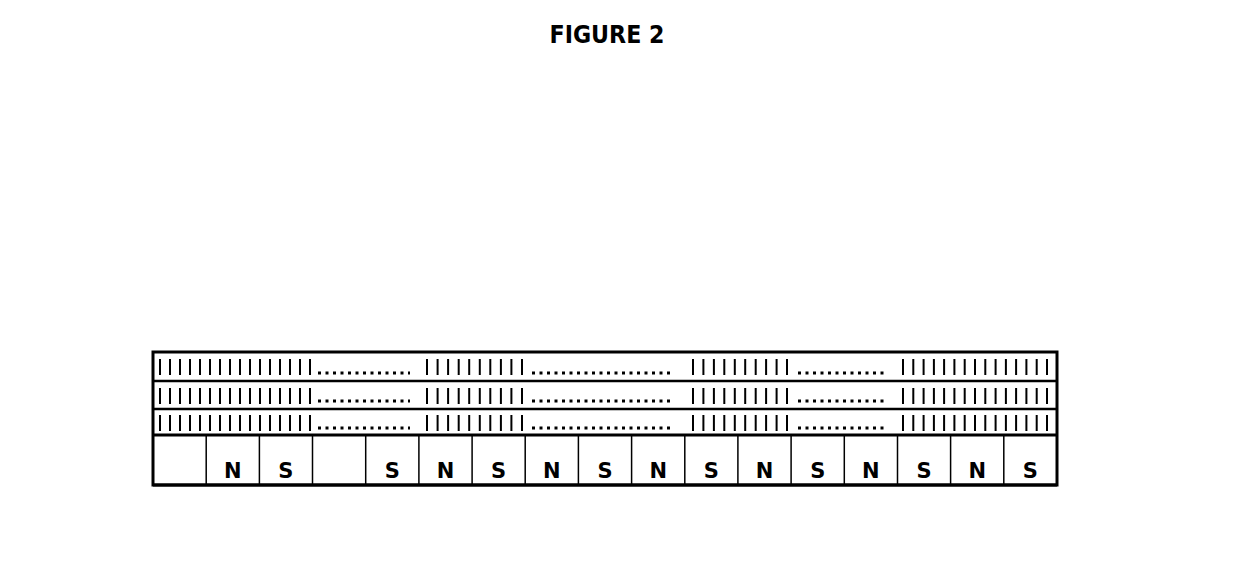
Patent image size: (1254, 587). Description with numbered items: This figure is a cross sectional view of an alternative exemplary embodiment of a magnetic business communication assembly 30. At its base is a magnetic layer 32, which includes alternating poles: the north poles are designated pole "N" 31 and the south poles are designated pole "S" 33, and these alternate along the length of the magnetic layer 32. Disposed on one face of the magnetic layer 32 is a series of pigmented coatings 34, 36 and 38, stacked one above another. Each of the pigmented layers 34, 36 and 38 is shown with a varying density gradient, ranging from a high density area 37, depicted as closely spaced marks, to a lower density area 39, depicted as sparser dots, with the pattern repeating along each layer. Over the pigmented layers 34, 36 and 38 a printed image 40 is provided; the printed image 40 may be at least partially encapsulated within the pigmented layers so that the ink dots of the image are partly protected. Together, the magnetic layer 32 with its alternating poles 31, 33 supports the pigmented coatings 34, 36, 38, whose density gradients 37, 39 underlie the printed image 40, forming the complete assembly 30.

The magnetic business communication assembly 30 is at (112, 395).
The pole "N" 31 is at (352, 470).
The magnetic layer 32 is at (150, 474).
The pole "S" 33 is at (190, 473).
The pigmented coating 34 is at (1040, 423).
The pigmented coating 36 is at (1043, 395).
The high density area 37 is at (207, 367).
The pigmented coating 38 is at (625, 315).
The lower density area 39 is at (622, 367).
The printed image 40 is at (387, 313).